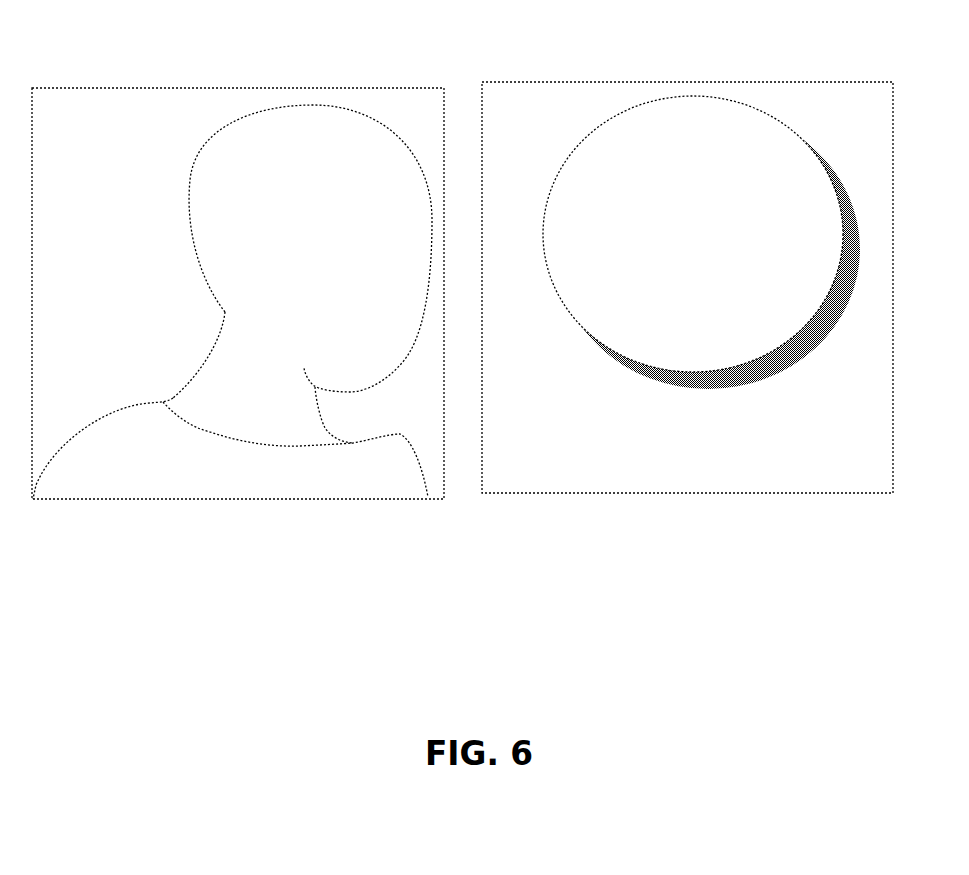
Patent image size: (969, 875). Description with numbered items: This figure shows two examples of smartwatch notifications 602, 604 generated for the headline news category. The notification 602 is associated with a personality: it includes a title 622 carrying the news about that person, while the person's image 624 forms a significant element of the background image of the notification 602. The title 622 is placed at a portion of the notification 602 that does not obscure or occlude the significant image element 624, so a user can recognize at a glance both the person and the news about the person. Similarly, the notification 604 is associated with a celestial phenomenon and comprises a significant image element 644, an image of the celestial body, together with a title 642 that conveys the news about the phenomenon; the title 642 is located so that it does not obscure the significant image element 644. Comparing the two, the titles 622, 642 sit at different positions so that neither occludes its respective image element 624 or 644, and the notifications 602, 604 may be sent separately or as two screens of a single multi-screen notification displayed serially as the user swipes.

The notification 602 is at (252, 498).
The notification 604 is at (733, 493).
The title 622 is at (102, 260).
The significant image element 624 is at (330, 108).
The title 642 is at (542, 438).
The significant image element 644 is at (657, 127).